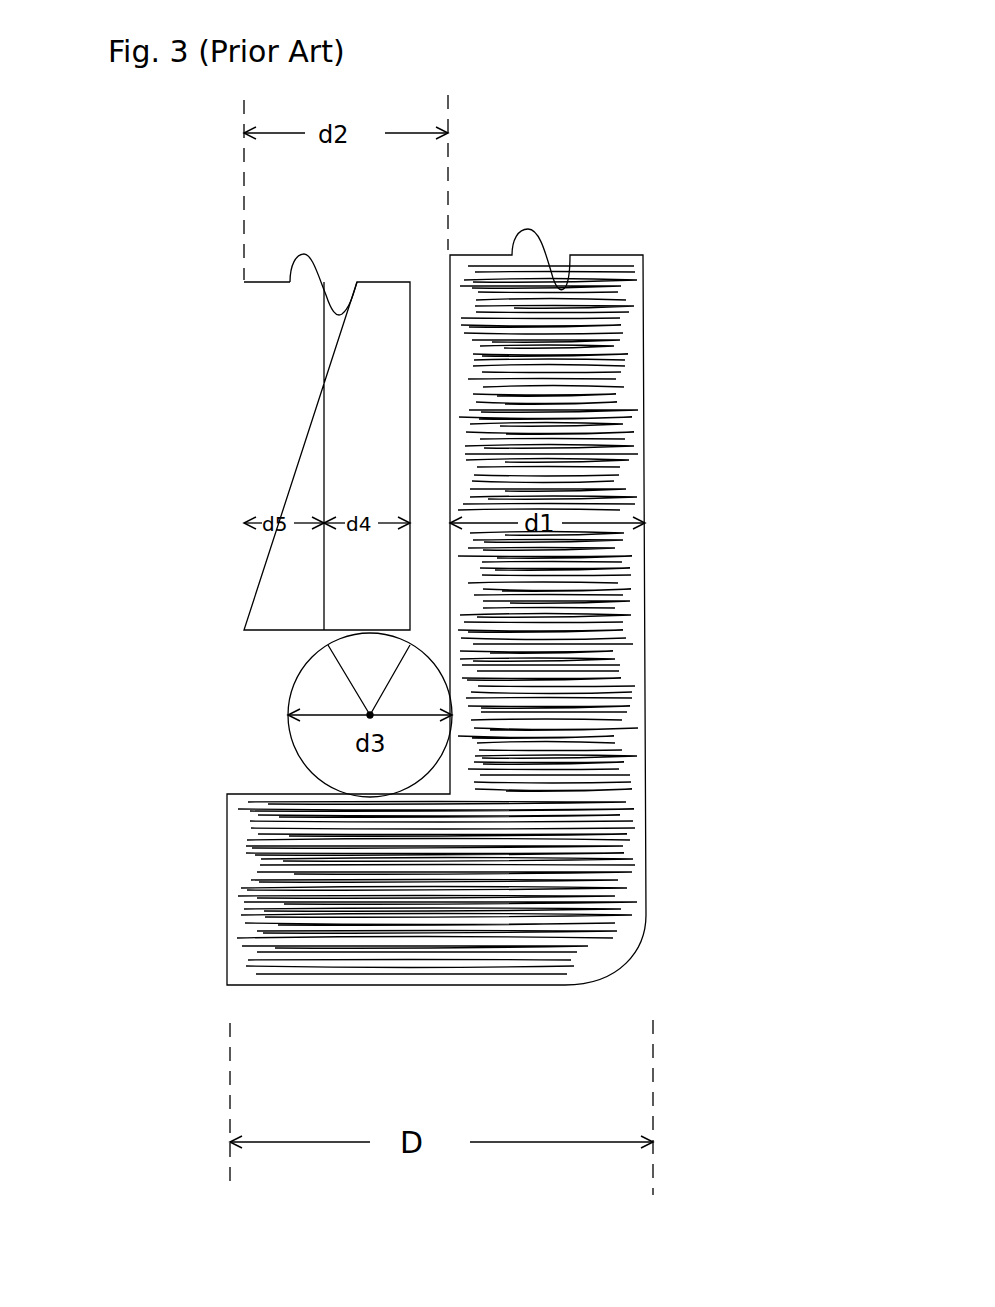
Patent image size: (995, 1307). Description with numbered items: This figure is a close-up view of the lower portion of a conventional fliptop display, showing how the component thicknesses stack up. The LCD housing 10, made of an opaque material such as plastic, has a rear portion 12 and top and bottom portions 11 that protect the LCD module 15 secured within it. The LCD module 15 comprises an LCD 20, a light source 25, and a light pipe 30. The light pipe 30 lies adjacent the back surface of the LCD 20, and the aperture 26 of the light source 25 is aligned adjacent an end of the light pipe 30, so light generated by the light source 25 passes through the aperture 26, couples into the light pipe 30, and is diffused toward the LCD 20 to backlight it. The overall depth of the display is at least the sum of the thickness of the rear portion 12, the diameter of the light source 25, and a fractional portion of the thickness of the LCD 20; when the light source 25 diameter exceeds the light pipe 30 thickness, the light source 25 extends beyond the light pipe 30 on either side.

The LCD housing 10 is at (548, 593).
The top and bottom portions 11 is at (449, 997).
The rear portion 12 is at (687, 432).
The LCD module 15 is at (240, 490).
The LCD 20 is at (277, 407).
The light source 25 is at (284, 685).
The light source aperture 26 is at (368, 618).
The light pipe 30 is at (385, 262).